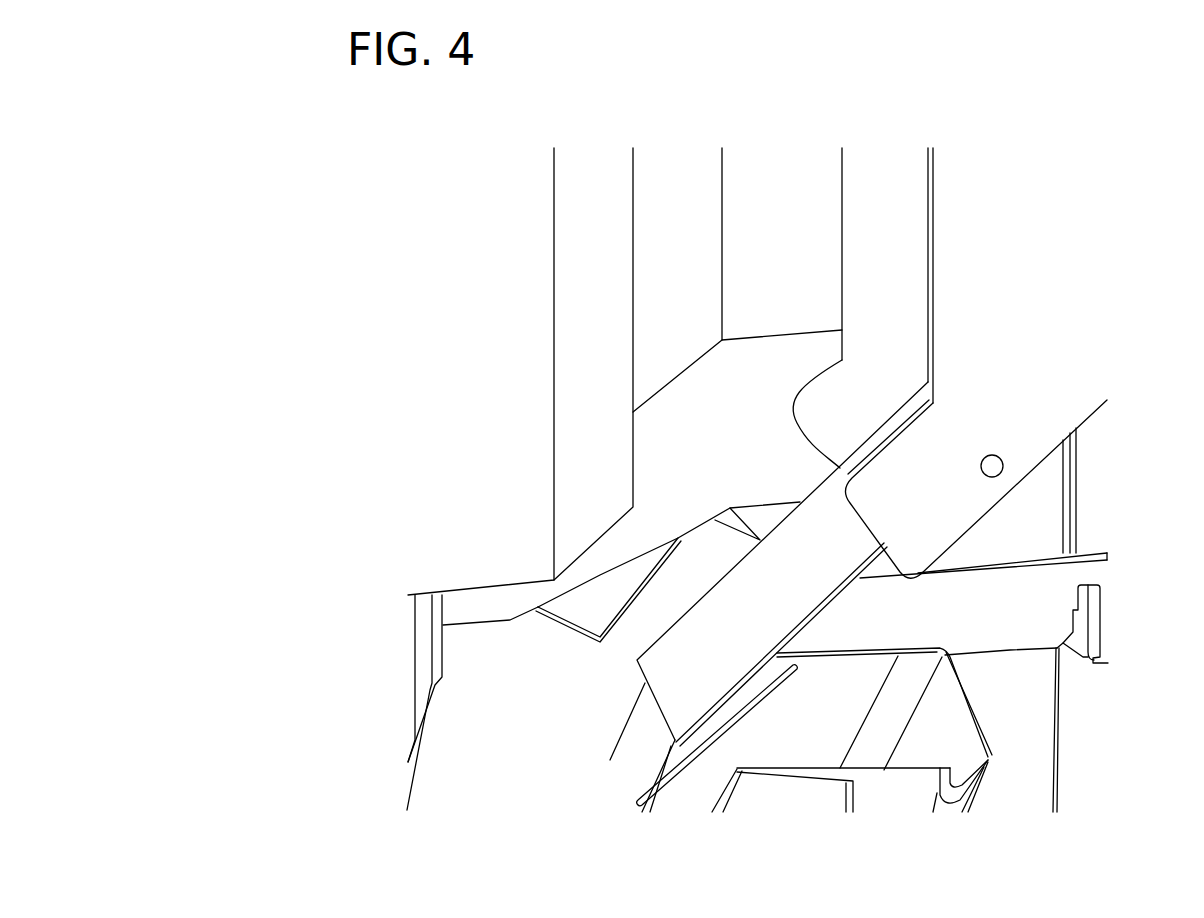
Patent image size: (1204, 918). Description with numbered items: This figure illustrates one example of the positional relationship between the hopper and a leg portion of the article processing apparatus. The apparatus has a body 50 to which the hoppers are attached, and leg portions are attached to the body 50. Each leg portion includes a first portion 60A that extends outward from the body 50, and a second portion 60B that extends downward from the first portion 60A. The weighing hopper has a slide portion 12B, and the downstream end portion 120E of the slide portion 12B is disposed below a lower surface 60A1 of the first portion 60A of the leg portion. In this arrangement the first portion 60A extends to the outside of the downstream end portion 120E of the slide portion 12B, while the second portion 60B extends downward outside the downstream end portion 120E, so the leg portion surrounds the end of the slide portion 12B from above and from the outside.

The body 50 is at (508, 352).
The first portion 60A is at (751, 392).
The lower surface 60A1 is at (472, 625).
The slide portion 12B is at (726, 590).
The downstream end portion 120E is at (650, 698).
The second portion 60B is at (1017, 716).